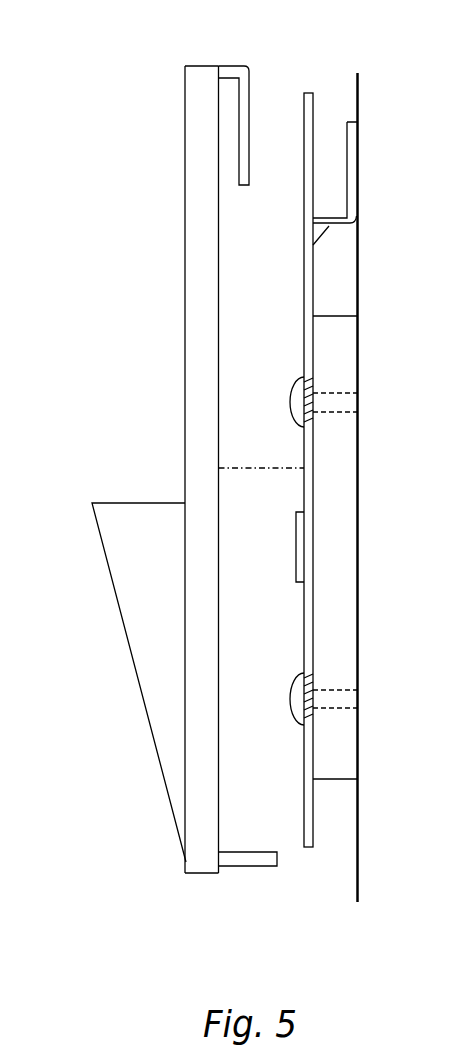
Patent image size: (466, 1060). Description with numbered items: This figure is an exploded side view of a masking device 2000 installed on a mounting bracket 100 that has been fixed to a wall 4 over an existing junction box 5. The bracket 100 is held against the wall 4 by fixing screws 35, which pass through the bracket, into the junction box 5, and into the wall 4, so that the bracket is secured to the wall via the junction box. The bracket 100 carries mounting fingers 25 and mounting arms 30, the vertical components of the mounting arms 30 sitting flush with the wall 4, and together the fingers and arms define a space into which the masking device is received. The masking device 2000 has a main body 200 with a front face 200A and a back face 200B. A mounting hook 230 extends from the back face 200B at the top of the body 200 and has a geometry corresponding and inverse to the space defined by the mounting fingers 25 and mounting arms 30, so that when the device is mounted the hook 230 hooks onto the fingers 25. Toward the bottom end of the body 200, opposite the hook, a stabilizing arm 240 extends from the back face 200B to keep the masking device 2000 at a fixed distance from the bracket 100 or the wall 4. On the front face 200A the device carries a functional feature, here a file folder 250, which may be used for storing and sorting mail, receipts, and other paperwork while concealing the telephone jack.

The masking device 2000 is at (143, 155).
The main body 200 is at (203, 340).
The front face 200A is at (186, 403).
The back face 200B is at (221, 405).
The mounting hook 230 is at (251, 115).
The stabilizing arm 240 is at (250, 866).
The file folder 250 is at (128, 657).
The wall 4 is at (442, 253).
The mounting bracket 100 is at (312, 868).
The mounting finger 25 is at (313, 108).
The mounting arm 30 is at (350, 168).
The junction box 5 is at (342, 345).
The fixing screw 35 is at (333, 413).